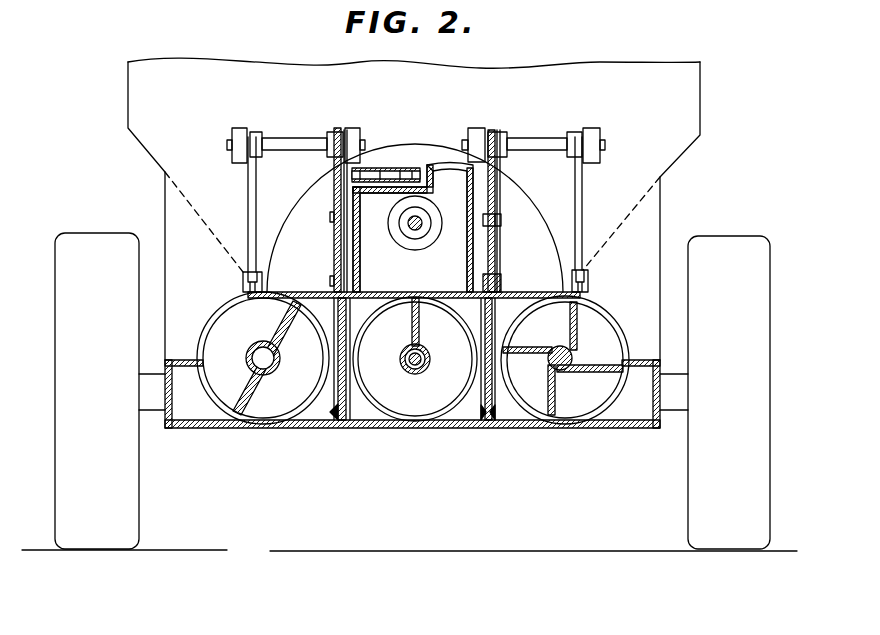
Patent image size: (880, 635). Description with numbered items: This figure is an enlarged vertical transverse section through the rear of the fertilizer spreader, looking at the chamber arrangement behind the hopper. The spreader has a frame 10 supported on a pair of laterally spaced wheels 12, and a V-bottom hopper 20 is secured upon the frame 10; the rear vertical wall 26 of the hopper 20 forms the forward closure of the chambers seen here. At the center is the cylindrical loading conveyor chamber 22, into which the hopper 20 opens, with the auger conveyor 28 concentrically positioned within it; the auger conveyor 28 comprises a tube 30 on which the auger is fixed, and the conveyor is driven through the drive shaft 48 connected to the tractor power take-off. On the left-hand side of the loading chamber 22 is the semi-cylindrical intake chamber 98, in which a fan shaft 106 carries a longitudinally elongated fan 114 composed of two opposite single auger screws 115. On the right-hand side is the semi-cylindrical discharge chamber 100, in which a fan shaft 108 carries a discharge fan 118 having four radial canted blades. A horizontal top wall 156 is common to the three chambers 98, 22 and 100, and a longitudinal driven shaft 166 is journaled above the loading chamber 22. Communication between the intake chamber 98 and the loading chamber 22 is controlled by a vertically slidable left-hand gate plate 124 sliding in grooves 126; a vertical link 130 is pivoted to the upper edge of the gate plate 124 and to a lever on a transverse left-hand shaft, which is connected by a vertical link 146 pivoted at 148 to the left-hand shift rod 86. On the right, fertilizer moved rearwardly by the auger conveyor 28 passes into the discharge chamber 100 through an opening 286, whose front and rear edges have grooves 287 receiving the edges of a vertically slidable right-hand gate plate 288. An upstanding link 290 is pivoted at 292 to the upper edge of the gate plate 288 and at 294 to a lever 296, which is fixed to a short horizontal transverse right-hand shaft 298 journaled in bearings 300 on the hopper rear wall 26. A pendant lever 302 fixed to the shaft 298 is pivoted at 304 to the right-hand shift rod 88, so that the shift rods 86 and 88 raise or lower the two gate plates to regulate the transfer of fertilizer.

The frame 10 is at (628, 434).
The wheels 12 is at (766, 326).
The V-bottom hopper 20 is at (704, 96).
The loading conveyor chamber 22 is at (449, 302).
The rear vertical wall 26 is at (574, 75).
The auger conveyor 28 is at (424, 351).
The tube 30 is at (398, 361).
The drive shaft 48 is at (408, 373).
The left-hand shift rod 86 is at (244, 284).
The right-hand shift rod 88 is at (587, 280).
The intake chamber 98 is at (216, 316).
The discharge chamber 100 is at (612, 312).
The fan shaft 106 is at (268, 370).
The fan shaft 108 is at (560, 371).
The fan 114 is at (242, 358).
The auger screws 115 is at (290, 328).
The discharge fan 118 is at (578, 352).
The gate plate 124 is at (343, 430).
The grooves 126 is at (332, 408).
The vertical link 130 is at (337, 172).
The vertical link 146 is at (250, 212).
The pivot 148 is at (264, 285).
The top wall 156 is at (390, 296).
The driven shaft 166 is at (421, 219).
The opening 286 is at (491, 428).
The grooves 287 is at (480, 424).
The right-hand gate plate 288 is at (497, 378).
The upstanding link 290 is at (500, 256).
The pivot 292 is at (503, 284).
The pivot 294 is at (503, 222).
The lever 296 is at (496, 196).
The right-hand shaft 298 is at (536, 139).
The bearings 300 is at (478, 132).
The pendant lever 302 is at (583, 206).
The pivot 304 is at (590, 288).